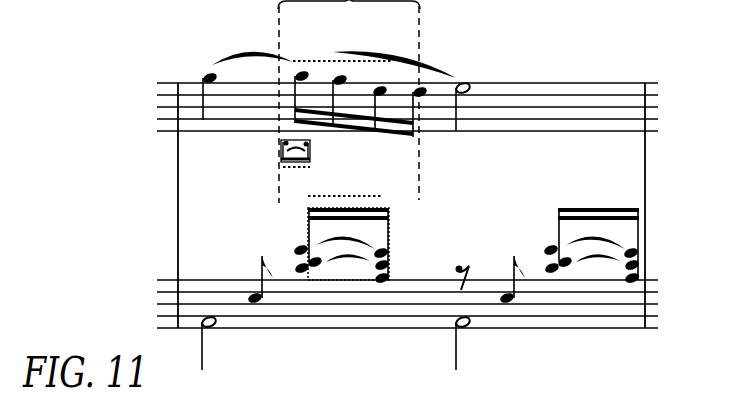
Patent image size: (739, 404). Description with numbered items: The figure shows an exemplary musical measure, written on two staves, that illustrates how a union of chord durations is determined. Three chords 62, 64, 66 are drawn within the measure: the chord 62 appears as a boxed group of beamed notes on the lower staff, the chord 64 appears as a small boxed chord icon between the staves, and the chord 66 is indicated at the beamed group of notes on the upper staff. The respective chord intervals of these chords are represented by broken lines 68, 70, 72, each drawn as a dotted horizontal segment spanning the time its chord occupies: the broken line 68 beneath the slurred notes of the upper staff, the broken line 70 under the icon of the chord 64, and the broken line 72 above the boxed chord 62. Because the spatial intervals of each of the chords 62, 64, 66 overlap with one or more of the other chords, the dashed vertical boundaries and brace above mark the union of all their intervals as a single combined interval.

The chord 62 is at (389, 228).
The chord 64 is at (281, 153).
The chord 66 is at (392, 131).
The broken line 68 is at (358, 60).
The broken line 70 is at (282, 176).
The broken line 72 is at (383, 196).